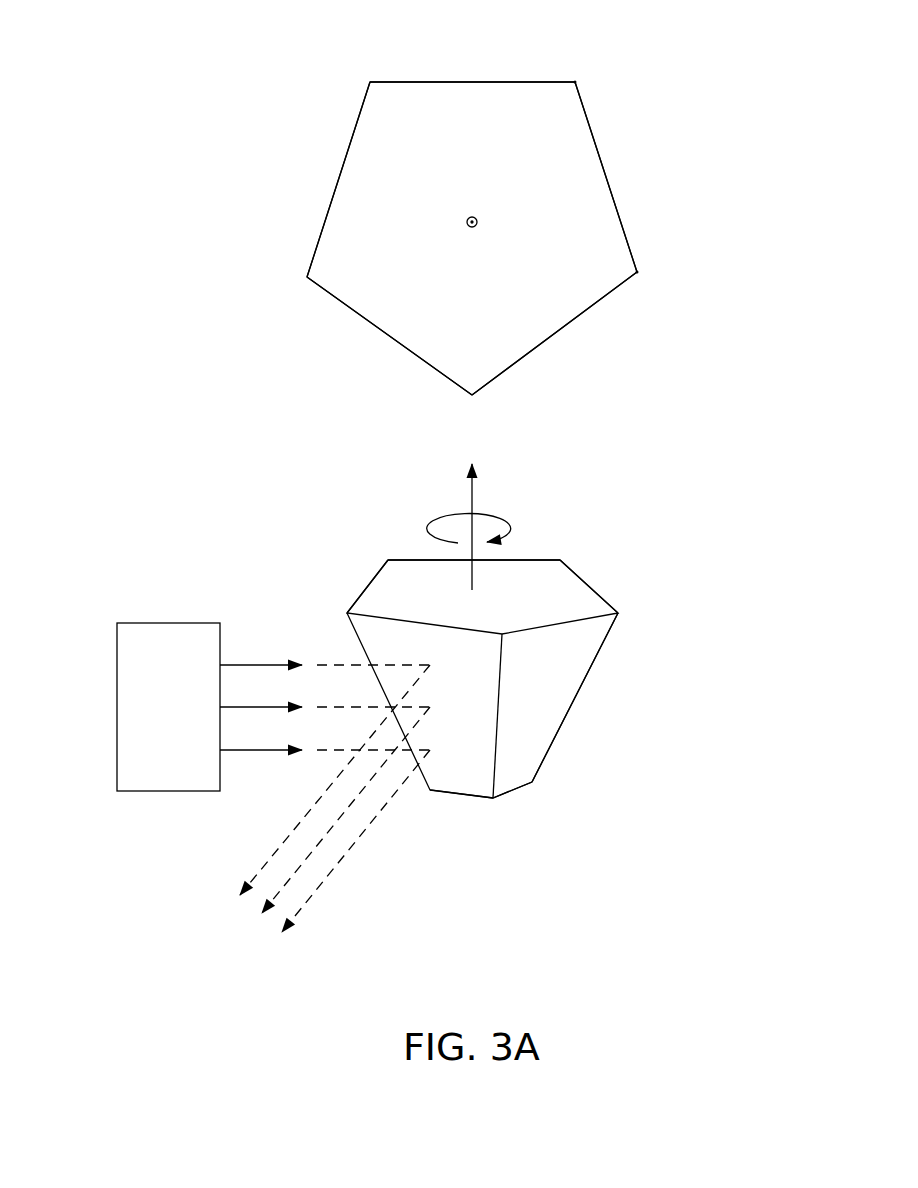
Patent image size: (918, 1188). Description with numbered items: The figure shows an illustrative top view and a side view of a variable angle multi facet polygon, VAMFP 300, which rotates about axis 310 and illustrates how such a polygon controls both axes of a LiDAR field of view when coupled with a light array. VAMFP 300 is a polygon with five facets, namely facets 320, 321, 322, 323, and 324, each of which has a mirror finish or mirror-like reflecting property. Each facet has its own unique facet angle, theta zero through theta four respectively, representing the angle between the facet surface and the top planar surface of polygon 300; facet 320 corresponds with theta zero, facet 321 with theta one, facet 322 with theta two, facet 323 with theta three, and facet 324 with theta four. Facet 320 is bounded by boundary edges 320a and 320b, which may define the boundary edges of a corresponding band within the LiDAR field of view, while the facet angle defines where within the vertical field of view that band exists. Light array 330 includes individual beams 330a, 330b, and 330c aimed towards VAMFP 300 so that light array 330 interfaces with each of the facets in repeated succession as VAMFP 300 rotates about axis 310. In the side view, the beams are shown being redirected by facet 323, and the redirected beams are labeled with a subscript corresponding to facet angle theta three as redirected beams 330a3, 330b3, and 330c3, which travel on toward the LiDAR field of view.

The variable angle multi facet polygon (VAMFP) 300 is at (195, 41).
The axis 310 is at (466, 222).
The facet 320 is at (608, 180).
The boundary edge 320a is at (641, 274).
The boundary edge 320b is at (578, 80).
The facet 321 is at (472, 82).
The facet 322 is at (335, 178).
The facet 323 is at (380, 337).
The facet 324 is at (560, 333).
The light array 330 is at (117, 708).
The individual beam 330a is at (273, 663).
The individual beam 330b is at (247, 707).
The individual beam 330c is at (255, 752).
The redirected beam 330a3 is at (293, 828).
The redirected beam 330b3 is at (297, 870).
The redirected beam 330c3 is at (315, 888).